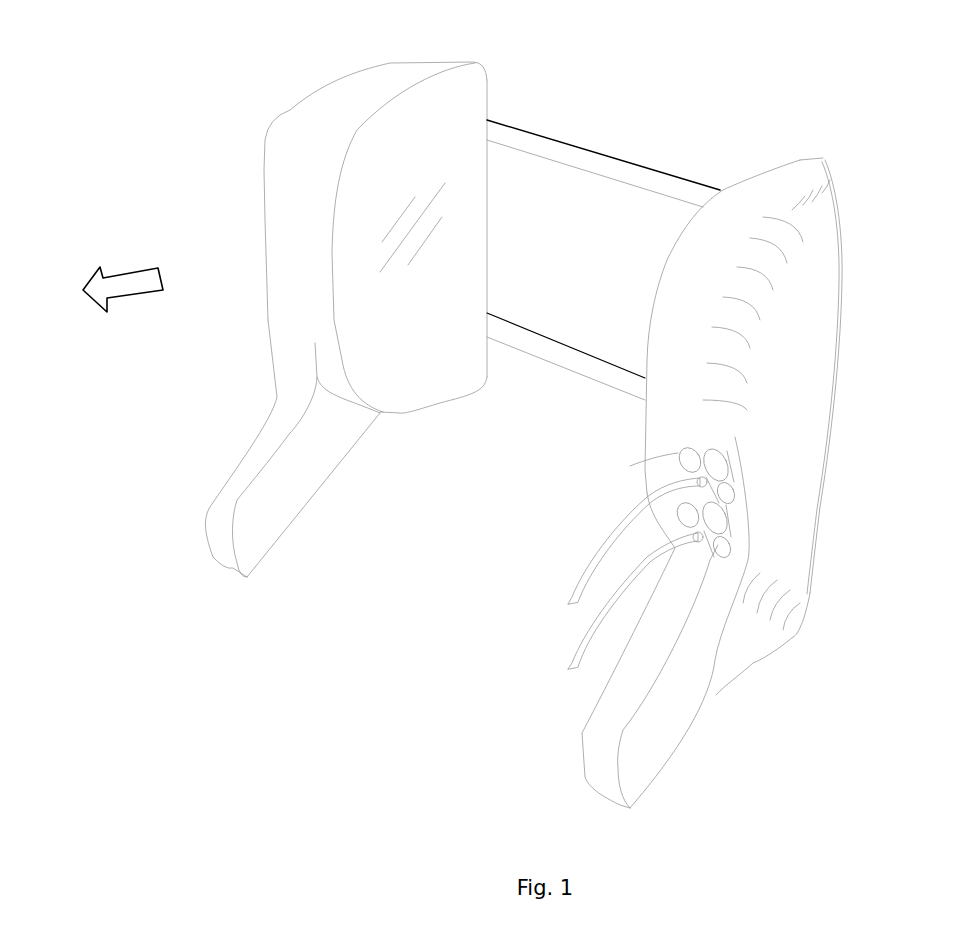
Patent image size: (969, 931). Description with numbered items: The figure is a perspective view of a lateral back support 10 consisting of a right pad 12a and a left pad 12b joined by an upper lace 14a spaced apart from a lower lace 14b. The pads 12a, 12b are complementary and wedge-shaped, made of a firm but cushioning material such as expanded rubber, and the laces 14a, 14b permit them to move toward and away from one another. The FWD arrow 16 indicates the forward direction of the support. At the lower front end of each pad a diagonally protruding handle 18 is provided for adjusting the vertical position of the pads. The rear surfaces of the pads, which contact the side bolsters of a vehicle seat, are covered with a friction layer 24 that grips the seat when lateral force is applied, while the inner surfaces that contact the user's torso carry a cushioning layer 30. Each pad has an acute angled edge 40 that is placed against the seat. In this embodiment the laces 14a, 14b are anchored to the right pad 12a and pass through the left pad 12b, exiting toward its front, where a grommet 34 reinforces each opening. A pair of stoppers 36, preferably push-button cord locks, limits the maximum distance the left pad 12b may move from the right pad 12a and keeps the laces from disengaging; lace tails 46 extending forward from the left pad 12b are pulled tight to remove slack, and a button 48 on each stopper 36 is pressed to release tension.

The lateral back support 10 is at (243, 195).
The right pad 12a is at (289, 116).
The left pad 12b is at (802, 160).
The upper lace 14a is at (560, 150).
The lower lace 14b is at (572, 365).
The FWD arrow 16 is at (147, 290).
The handle 18 is at (287, 513).
The friction layer 24 is at (835, 365).
The cushioning layer 30 is at (402, 388).
The grommet 34 is at (720, 457).
The stopper 36 is at (720, 548).
The acute angled edge 40 is at (487, 265).
The lace tail 46 is at (584, 573).
The button 48 is at (683, 455).